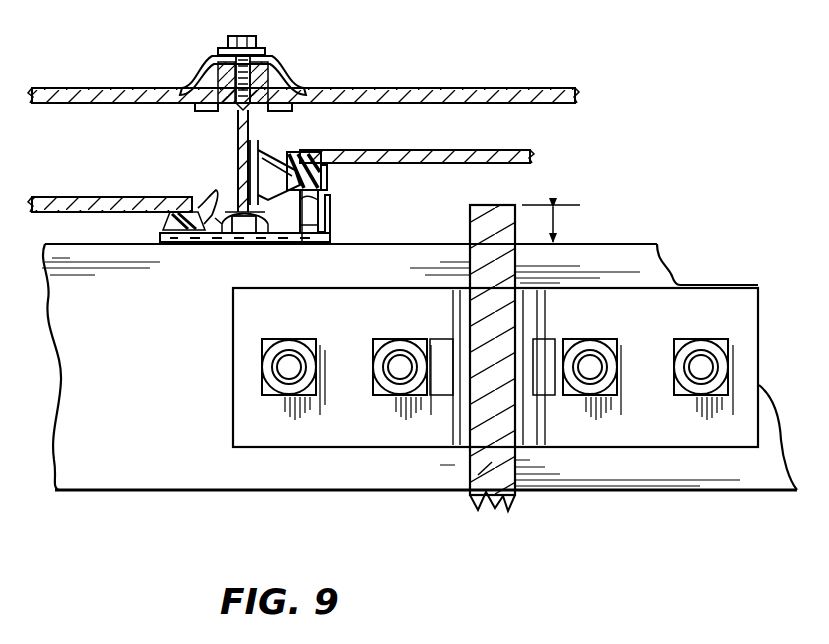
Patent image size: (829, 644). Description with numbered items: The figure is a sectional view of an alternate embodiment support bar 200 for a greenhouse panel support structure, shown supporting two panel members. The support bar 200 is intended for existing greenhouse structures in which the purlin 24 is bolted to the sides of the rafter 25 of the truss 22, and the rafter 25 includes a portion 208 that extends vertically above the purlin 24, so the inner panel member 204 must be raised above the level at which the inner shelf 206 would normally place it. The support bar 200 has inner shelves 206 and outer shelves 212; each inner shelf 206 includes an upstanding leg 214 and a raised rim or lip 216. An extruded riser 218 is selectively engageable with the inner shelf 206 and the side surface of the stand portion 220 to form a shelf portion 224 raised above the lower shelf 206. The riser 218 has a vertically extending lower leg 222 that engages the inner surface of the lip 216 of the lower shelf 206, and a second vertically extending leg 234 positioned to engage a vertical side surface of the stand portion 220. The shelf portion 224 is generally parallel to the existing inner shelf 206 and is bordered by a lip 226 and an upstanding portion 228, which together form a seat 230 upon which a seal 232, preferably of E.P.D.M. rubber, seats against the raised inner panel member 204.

The truss 22 is at (480, 518).
The purlin 24 is at (182, 480).
The rafter 25 is at (478, 475).
The support bar 200 is at (280, 64).
The inner panel member 204 is at (500, 150).
The inner shelf 206 is at (294, 242).
The portion of the rafter extending vertically above the purlin 208 is at (560, 224).
The outer shelf 212 is at (170, 106).
The upstanding leg 214 is at (202, 200).
The raised rim or lip 216 is at (331, 231).
The extruded riser 218 is at (258, 146).
The stand portion 220 is at (236, 132).
The lower leg 222 is at (324, 211).
The shelf portion 224 is at (302, 242).
The lip 226 is at (324, 182).
The upstanding portion 228 is at (280, 160).
The seat 230 is at (292, 164).
The seal 232 is at (340, 153).
The second vertically extending leg 234 is at (245, 165).